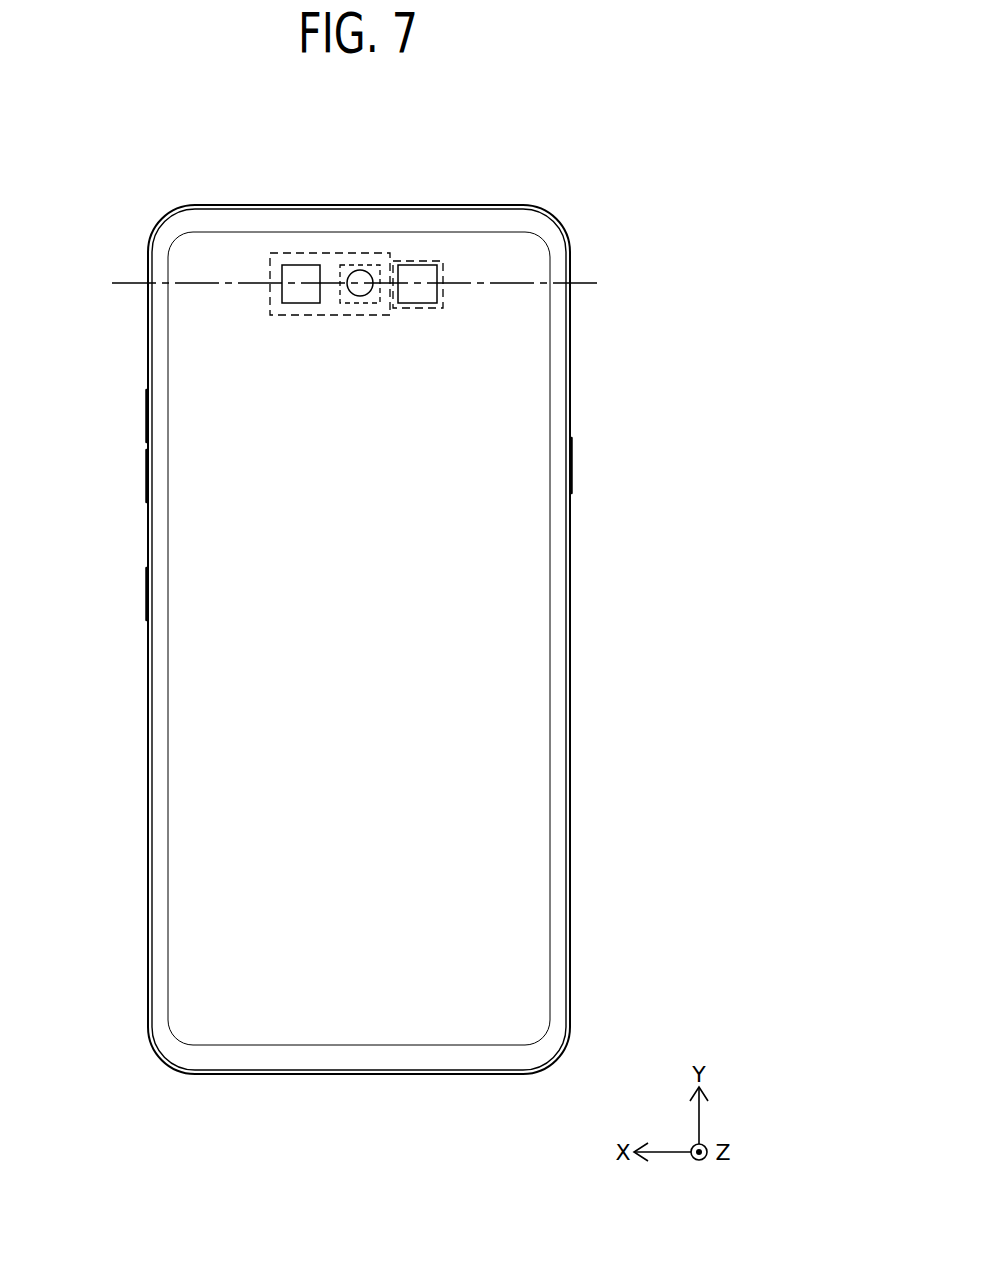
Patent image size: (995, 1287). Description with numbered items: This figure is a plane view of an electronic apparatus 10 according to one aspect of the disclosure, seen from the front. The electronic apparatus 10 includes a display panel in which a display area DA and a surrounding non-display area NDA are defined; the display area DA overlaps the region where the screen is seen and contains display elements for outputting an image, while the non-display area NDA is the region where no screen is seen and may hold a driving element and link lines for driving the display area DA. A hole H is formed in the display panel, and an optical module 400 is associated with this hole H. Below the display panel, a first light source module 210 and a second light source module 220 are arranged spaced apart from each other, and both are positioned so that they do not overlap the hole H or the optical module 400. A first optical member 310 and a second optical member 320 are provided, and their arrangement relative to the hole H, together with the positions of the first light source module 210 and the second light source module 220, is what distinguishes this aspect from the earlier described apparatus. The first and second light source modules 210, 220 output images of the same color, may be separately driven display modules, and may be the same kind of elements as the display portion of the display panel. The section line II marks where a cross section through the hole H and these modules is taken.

The electronic apparatus 10 is at (137, 165).
The first light source module 210 is at (287, 265).
The second light source module 220 is at (427, 265).
The first optical member 310 is at (310, 253).
The second optical member 320 is at (403, 261).
The optical module 400 is at (343, 263).
The hole H is at (363, 270).
The display area DA is at (480, 595).
The non-display area NDA is at (557, 737).
The section line II-II' II is at (360, 284).